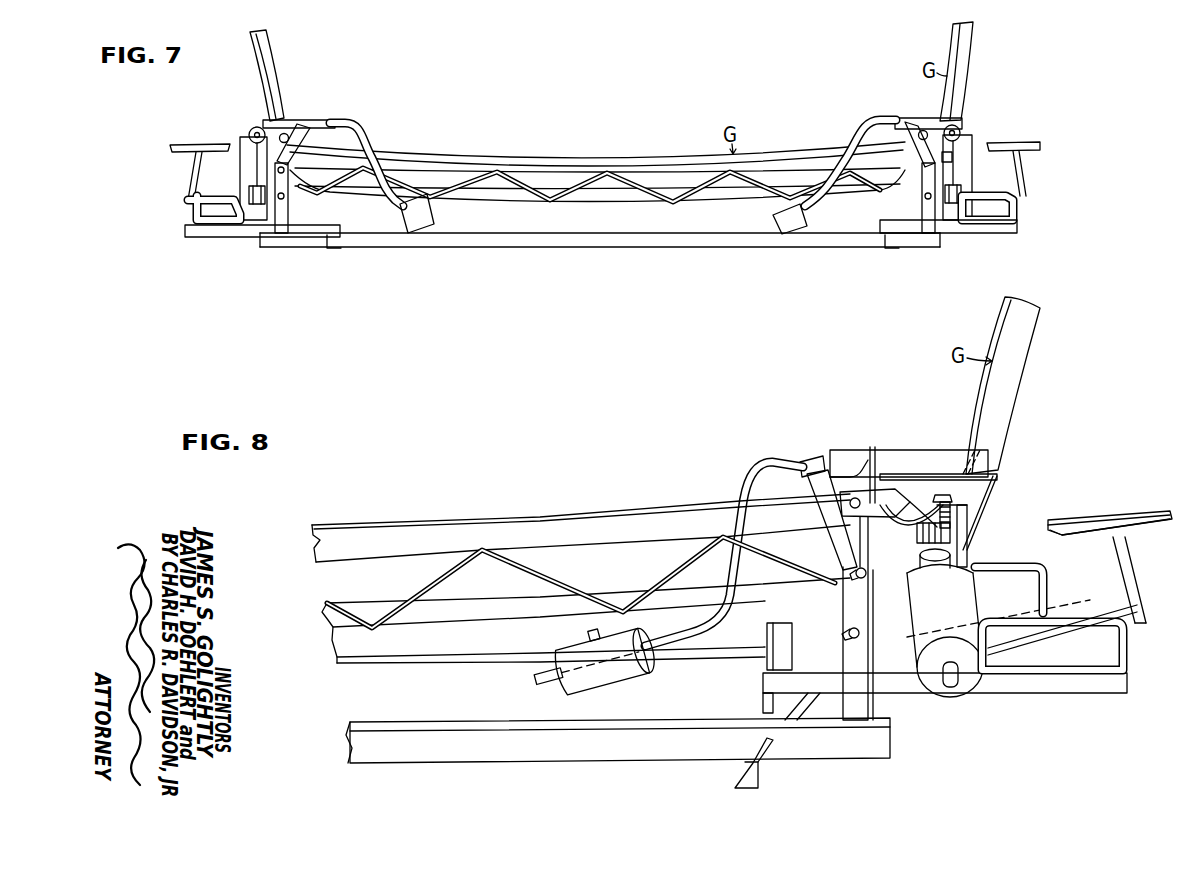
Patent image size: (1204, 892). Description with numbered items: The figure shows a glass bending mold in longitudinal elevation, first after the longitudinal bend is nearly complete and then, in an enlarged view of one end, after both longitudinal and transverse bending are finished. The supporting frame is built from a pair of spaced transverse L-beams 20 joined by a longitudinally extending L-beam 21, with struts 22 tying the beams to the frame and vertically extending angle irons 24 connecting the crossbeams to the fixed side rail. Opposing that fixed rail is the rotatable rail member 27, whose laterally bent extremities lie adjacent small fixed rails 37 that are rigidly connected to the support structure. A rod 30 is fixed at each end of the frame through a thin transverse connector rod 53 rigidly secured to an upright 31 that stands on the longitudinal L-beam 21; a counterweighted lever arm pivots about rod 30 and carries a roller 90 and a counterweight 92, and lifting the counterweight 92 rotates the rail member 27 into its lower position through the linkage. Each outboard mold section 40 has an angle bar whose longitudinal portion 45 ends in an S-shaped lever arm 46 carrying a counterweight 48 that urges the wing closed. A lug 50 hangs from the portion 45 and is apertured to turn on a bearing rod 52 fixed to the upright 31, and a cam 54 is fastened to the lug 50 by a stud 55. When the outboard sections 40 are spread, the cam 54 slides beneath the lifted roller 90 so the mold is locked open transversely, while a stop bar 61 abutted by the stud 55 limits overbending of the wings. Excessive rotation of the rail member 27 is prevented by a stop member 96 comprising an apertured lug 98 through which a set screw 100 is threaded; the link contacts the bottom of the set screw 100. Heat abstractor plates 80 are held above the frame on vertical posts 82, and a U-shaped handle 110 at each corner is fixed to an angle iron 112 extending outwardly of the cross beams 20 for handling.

In FIG. 7, the L-beam 20 is at (887, 252).
In FIG. 8, the L-beam 20 is at (765, 768).
In FIG. 7, the longitudinally extending L-beam 21 is at (477, 249).
In FIG. 8, the longitudinally extending L-beam 21 is at (618, 740).
In FIG. 8, the strut 22 is at (468, 668).
In FIG. 8, the angle iron 24 is at (767, 645).
In FIG. 7, the rotatable rail member 27 is at (437, 157).
In FIG. 8, the rotatable rail member 27 is at (322, 547).
In FIG. 7, the rod 30 is at (250, 192).
In FIG. 7, the upright 31 is at (289, 209).
In FIG. 8, the upright 31 is at (870, 702).
In FIG. 8, the small fixed rail 37 is at (847, 545).
In FIG. 7, the outboard mold section 40 is at (962, 83).
In FIG. 8, the outboard mold section 40 is at (1011, 418).
In FIG. 7, the longitudinal portion 45 is at (308, 120).
In FIG. 8, the longitudinal portion 45 is at (913, 465).
In FIG. 8, the S-shaped lever arm 46 is at (737, 522).
In FIG. 7, the counterweight 48 is at (434, 212).
In FIG. 8, the counterweight 48 is at (592, 658).
In FIG. 8, the lug 50 is at (820, 458).
In FIG. 7, the bearing rod 52 is at (953, 158).
In FIG. 8, the bearing rod 52 is at (852, 579).
In FIG. 7, the transverse connector rod 53 is at (923, 197).
In FIG. 8, the transverse connector rod 53 is at (848, 640).
In FIG. 7, the cam 54 is at (292, 128).
In FIG. 8, the cam 54 is at (869, 465).
In FIG. 8, the stud 55 is at (880, 494).
In FIG. 7, the stop bar 61 is at (305, 138).
In FIG. 8, the stop bar 61 is at (838, 510).
In FIG. 7, the heat abstractor plate 80 is at (184, 145).
In FIG. 8, the heat abstractor plate 80 is at (1098, 519).
In FIG. 7, the vertical post 82 is at (194, 174).
In FIG. 8, the vertical post 82 is at (1133, 558).
In FIG. 8, the roller 90 is at (953, 553).
In FIG. 7, the counterweight 92 is at (250, 130).
In FIG. 8, the counterweight 92 is at (998, 631).
In FIG. 8, the stop member 96 is at (968, 530).
In FIG. 8, the apertured lug 98 is at (996, 483).
In FIG. 8, the set screw 100 is at (941, 495).
In FIG. 7, the handle 110 is at (195, 213).
In FIG. 8, the handle 110 is at (1122, 647).
In FIG. 7, the angle iron 112 is at (239, 238).
In FIG. 8, the angle iron 112 is at (1032, 694).